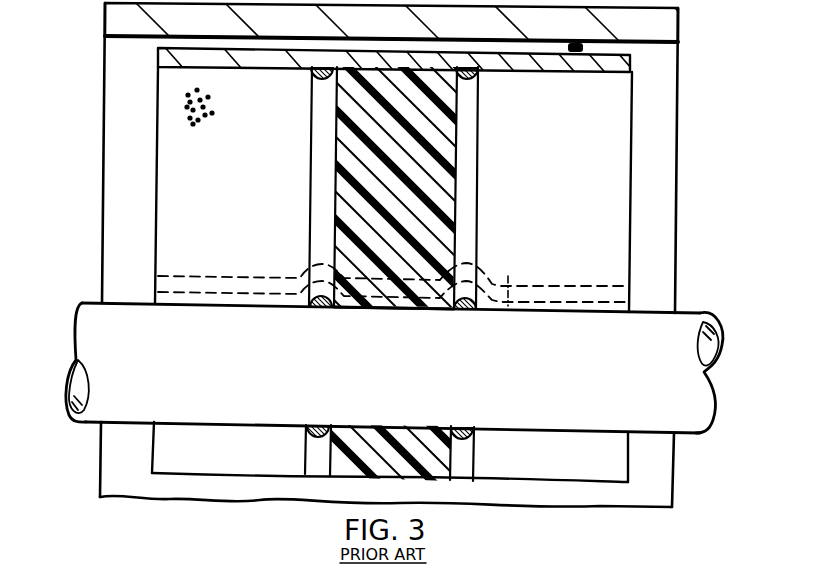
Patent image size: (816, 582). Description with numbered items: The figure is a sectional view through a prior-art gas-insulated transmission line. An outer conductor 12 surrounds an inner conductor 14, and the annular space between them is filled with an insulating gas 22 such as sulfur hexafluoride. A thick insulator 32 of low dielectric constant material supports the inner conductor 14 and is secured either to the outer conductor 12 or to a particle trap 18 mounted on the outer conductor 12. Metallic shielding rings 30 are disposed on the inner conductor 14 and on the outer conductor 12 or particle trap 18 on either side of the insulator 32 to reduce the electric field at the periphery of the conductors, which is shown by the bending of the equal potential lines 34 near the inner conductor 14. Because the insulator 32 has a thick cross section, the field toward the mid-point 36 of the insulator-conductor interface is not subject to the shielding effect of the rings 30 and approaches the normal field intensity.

The outer conductor 12 is at (668, 30).
The inner conductor 14 is at (82, 320).
The particle trap 18 is at (538, 62).
The insulating gas 22 is at (203, 117).
The metallic shielding rings 30 is at (316, 311).
The insulator 32 is at (443, 143).
The equal potential lines 34 is at (508, 285).
The mid-point of the insulator conductor interface 36 is at (393, 311).